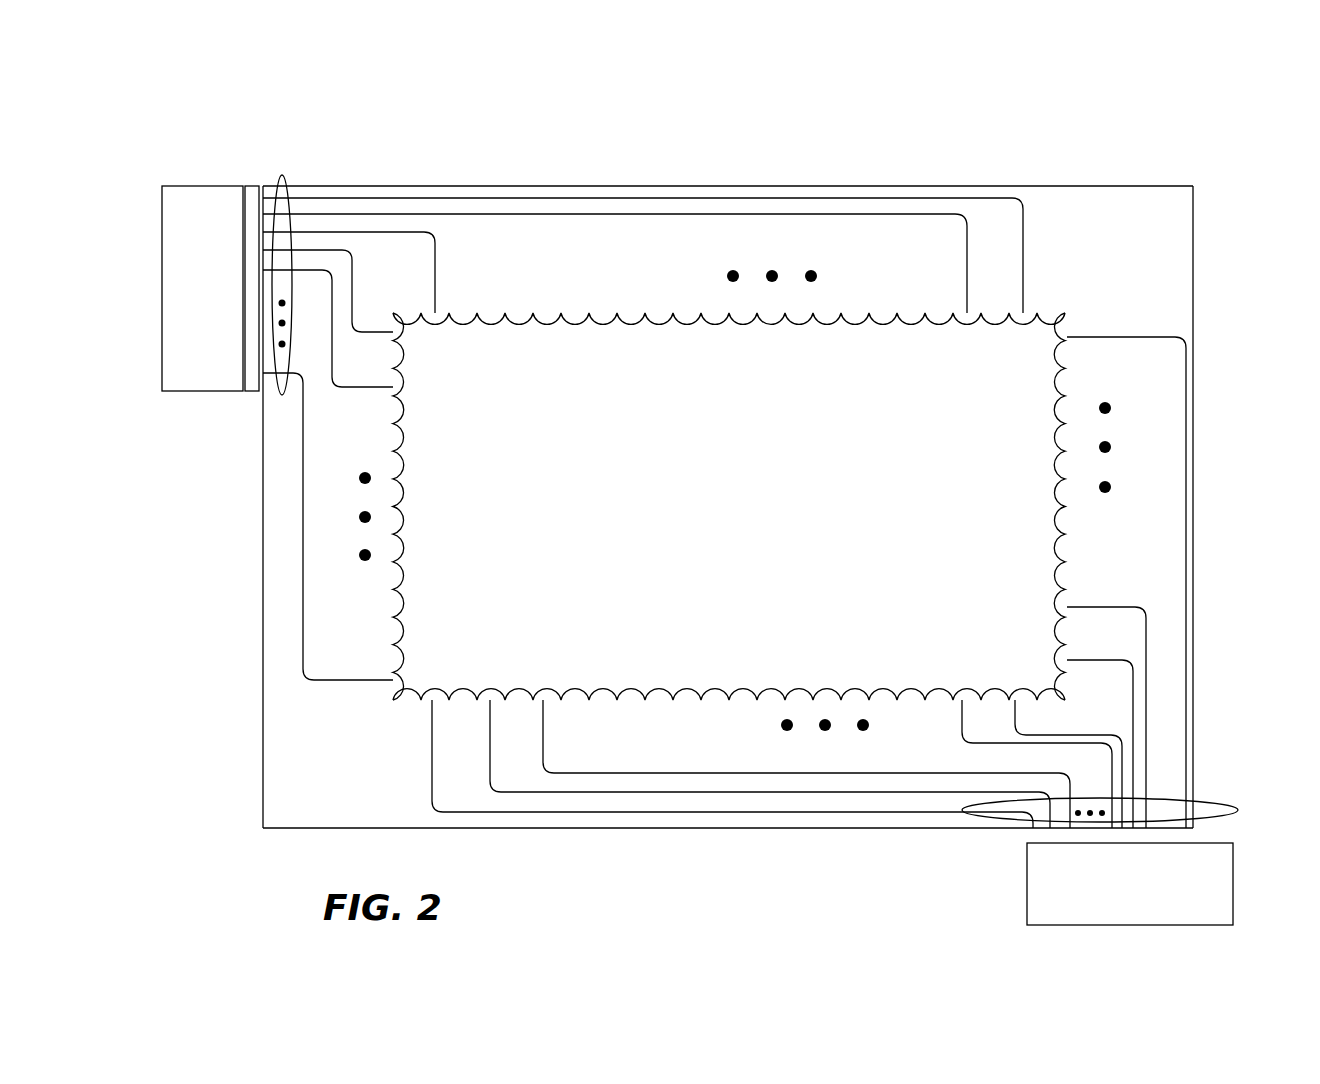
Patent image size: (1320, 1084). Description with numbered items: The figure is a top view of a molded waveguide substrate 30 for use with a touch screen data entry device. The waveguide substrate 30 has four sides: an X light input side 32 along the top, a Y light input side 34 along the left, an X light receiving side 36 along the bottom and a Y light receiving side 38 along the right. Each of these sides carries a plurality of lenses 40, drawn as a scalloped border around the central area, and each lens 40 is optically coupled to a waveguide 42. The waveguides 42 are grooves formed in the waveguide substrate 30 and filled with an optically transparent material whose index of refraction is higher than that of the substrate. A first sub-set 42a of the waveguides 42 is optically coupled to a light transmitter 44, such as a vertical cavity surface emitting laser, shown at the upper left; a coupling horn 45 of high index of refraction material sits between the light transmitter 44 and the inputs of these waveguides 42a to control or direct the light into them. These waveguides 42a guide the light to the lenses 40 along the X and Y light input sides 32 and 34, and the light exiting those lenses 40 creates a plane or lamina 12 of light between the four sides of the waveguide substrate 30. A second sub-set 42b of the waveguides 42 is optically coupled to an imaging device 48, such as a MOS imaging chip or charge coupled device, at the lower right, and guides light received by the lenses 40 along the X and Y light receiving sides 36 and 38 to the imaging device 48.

The plane or lamina of light 12 is at (739, 518).
The waveguide substrate 30 is at (174, 770).
The X light input side 32 is at (1103, 187).
The Y light input side 34 is at (262, 716).
The X light receiving side 36 is at (912, 829).
The Y light receiving side 38 is at (1194, 700).
The lens 40 is at (758, 326).
The waveguide 42 is at (967, 256).
The first sub-set of waveguides 42a is at (283, 186).
The second sub-set of waveguides 42b is at (1234, 807).
The light transmitter 44 is at (162, 246).
The coupling horn 45 is at (253, 186).
The imaging device 48 is at (1233, 875).